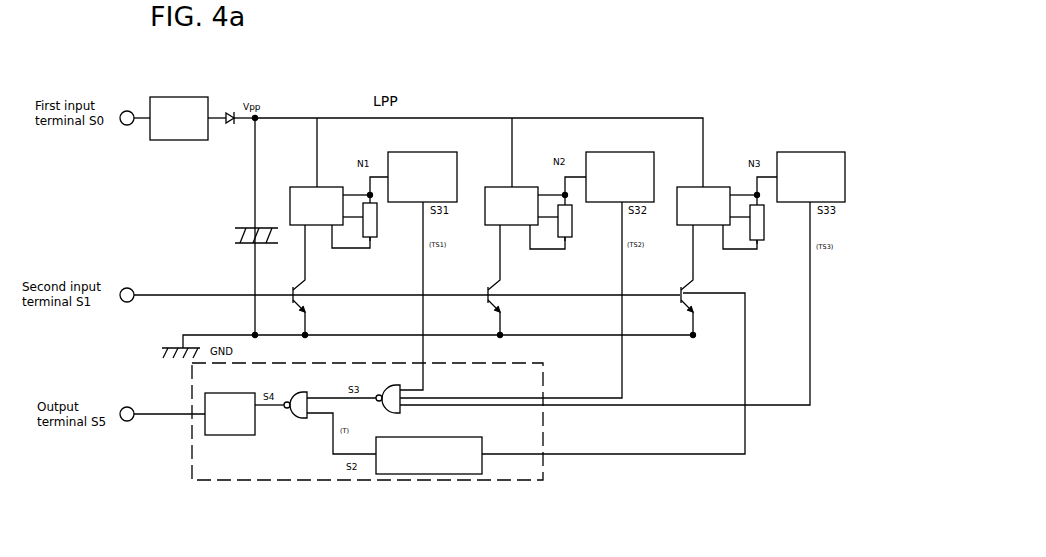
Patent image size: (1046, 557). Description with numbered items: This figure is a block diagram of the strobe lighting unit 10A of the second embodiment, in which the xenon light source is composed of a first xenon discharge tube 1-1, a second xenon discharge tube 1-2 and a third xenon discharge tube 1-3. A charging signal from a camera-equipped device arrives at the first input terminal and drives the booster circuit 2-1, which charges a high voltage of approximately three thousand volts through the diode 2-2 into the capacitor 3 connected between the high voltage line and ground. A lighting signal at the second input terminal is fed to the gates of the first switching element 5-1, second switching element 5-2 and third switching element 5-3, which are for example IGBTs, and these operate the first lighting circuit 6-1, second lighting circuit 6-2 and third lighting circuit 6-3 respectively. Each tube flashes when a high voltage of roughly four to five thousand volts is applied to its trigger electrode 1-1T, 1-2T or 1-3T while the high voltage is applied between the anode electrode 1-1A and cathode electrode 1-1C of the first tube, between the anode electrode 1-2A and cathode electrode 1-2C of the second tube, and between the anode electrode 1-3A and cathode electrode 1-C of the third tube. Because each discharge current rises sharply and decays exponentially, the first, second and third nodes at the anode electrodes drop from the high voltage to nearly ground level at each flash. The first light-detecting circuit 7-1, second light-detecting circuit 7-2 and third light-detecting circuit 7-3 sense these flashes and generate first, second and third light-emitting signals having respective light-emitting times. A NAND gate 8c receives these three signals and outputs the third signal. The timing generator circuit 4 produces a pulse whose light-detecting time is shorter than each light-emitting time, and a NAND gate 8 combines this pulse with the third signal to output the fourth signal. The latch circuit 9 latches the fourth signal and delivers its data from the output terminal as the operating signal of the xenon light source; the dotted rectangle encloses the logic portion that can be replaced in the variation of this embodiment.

The booster circuit 2-1 is at (183, 97).
The diode 2-2 is at (228, 112).
The strobe lighting unit 10A is at (515, 93).
The capacitor 3 is at (235, 236).
The first lighting circuit 6-1 is at (300, 187).
The second lighting circuit 6-2 is at (495, 187).
The third lighting circuit 6-3 is at (687, 187).
The first light-detecting circuit 7-1 is at (415, 152).
The second light-detecting circuit 7-2 is at (612, 152).
The third light-detecting circuit 7-3 is at (803, 152).
The first xenon discharge tube 1-1 is at (373, 216).
The second xenon discharge tube 1-2 is at (567, 216).
The third xenon discharge tube 1-3 is at (759, 217).
The anode electrode 1-1A is at (368, 193).
The anode electrode 1-2A is at (563, 193).
The anode electrode 1-3A is at (755, 193).
The trigger electrode 1-1T is at (350, 240).
The trigger electrode 1-2T is at (548, 240).
The trigger electrode 1-3T is at (741, 240).
The cathode electrode 1-1C is at (373, 240).
The cathode electrode 1-2C is at (568, 238).
The cathode electrode 1-C is at (762, 241).
The first switching element 5-1 is at (313, 281).
The second switching element 5-2 is at (507, 281).
The third switching element 5-3 is at (699, 281).
The NAND gate 8 is at (304, 392).
The NAND gate 8c is at (392, 387).
The latch circuit 9 is at (228, 437).
The timing generator circuit 4 is at (465, 437).